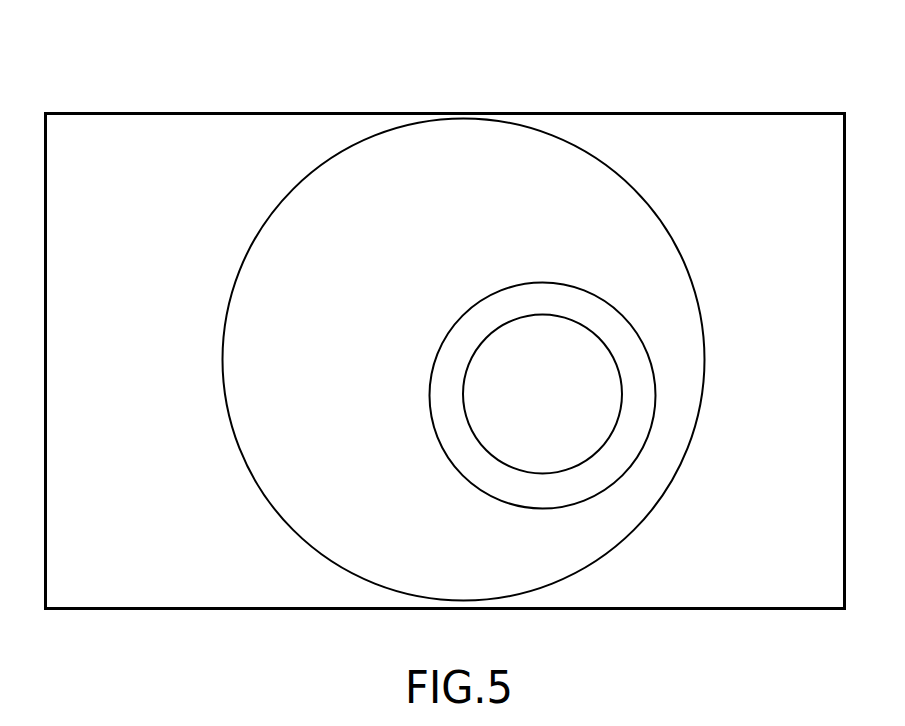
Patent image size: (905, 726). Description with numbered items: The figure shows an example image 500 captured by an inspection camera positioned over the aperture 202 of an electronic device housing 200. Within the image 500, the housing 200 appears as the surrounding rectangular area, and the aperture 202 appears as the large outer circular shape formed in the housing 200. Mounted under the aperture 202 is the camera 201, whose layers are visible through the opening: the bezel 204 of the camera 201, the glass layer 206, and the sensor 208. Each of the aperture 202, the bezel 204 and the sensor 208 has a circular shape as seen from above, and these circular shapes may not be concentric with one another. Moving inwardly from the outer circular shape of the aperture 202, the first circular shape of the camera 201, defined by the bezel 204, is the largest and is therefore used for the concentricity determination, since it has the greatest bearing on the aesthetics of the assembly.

The image 500 is at (723, 87).
The housing 200 is at (138, 168).
The aperture 202 is at (222, 361).
The bezel 204 is at (273, 387).
The camera 201 is at (553, 282).
The glass layer 206 is at (455, 432).
The sensor 208 is at (513, 443).